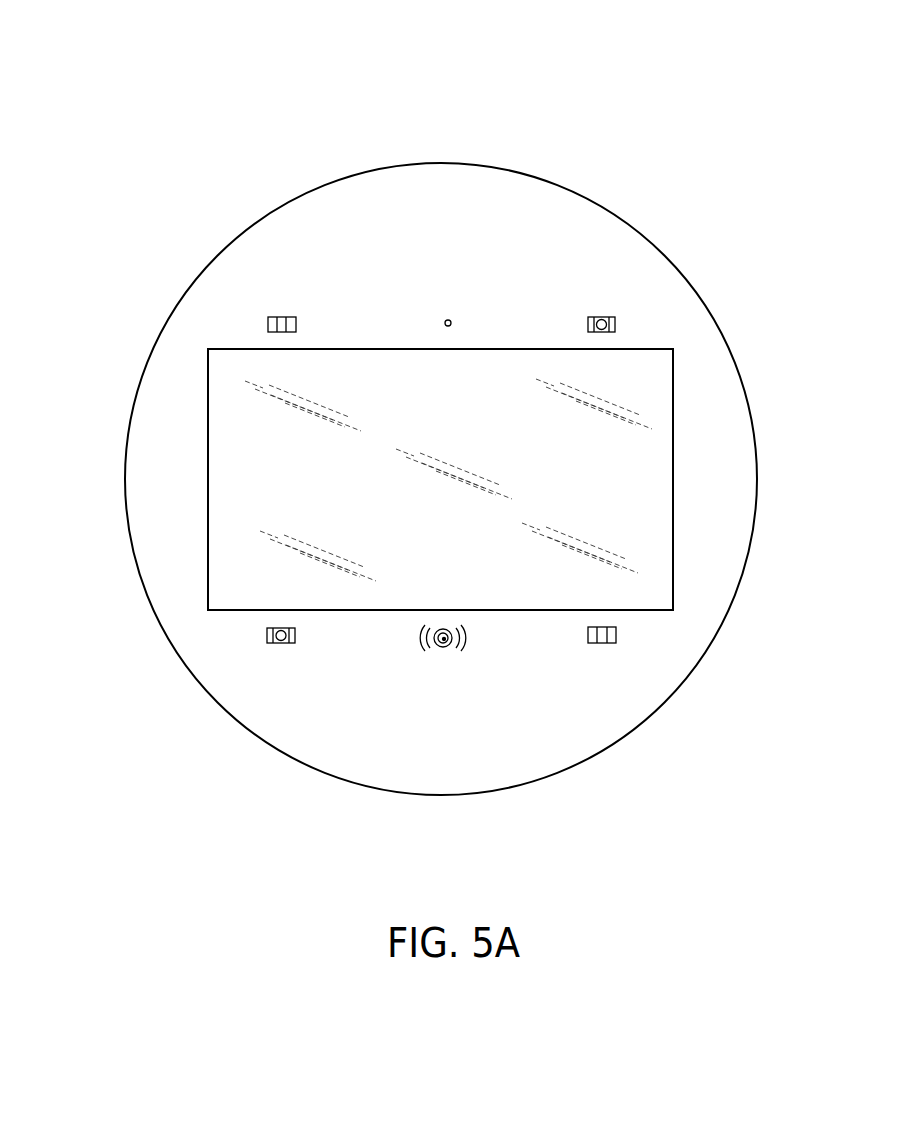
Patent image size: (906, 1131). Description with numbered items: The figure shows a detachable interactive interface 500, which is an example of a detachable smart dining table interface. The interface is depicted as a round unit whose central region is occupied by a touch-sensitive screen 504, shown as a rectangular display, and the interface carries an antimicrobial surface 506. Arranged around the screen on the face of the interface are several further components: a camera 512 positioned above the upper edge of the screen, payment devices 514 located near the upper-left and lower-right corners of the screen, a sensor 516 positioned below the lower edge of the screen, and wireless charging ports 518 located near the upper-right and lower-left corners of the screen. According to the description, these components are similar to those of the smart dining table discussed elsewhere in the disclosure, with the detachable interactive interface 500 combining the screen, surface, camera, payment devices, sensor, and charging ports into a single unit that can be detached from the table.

The detachable interactive interface 500 is at (668, 35).
The touch-sensitive screen 504 is at (244, 459).
The antimicrobial surface 506 is at (267, 537).
The camera 512 is at (448, 319).
The payment device 514 is at (282, 312).
The sensor 516 is at (473, 643).
The wireless charging port 518 is at (605, 313).